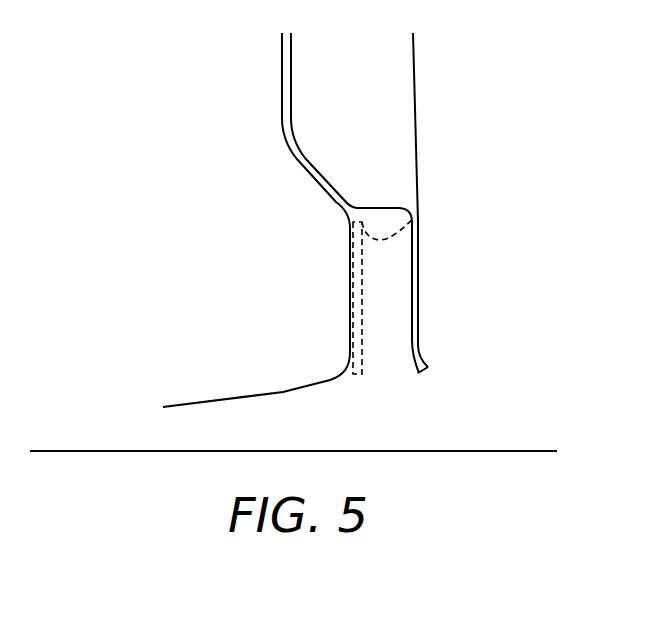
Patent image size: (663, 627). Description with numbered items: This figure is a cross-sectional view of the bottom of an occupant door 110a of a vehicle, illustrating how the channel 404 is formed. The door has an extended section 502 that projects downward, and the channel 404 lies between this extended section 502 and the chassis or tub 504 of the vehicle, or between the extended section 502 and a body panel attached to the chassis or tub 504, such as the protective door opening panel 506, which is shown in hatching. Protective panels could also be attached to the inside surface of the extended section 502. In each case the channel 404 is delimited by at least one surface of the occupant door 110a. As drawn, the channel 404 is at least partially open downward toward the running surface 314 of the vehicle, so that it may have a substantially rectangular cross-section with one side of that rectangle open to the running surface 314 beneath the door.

The occupant door 110a is at (382, 75).
The chassis or tub 504 is at (307, 373).
The protective door opening panel 506 is at (418, 222).
The extended section 502 is at (422, 284).
The channel 404 is at (385, 328).
The running surface 314 is at (523, 451).